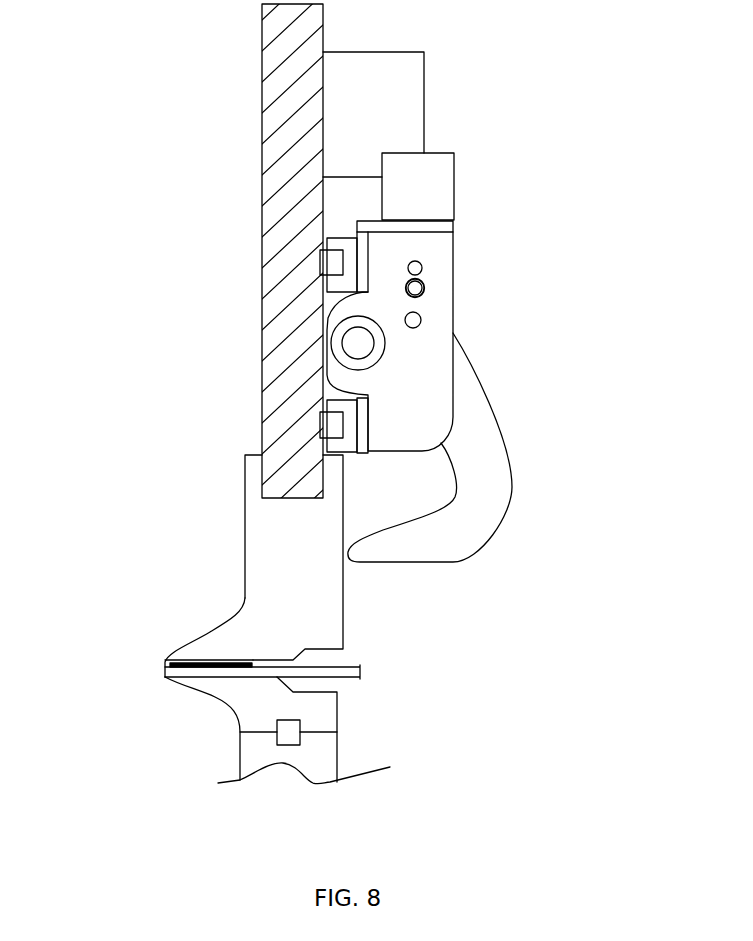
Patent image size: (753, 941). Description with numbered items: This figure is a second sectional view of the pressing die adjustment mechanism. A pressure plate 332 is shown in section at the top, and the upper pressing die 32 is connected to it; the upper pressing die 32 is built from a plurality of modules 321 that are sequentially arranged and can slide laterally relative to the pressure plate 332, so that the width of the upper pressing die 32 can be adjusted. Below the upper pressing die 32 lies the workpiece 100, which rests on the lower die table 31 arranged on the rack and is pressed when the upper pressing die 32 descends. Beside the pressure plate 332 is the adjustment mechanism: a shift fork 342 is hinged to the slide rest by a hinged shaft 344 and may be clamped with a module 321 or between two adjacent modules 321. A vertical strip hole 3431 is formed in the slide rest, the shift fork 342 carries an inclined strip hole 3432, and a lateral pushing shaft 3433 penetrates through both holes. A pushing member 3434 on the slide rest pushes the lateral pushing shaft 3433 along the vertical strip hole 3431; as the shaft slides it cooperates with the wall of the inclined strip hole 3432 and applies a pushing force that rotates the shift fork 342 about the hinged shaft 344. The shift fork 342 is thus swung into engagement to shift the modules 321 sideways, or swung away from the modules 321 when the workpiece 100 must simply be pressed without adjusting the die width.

The pressure plate 332 is at (290, 207).
The pushing member 3434 is at (431, 185).
The vertical strip hole 3431 is at (420, 265).
The inclined strip hole 3432 is at (423, 276).
The lateral pushing shaft 3433 is at (421, 287).
The hinged shaft 344 is at (422, 313).
The shift fork 342 is at (480, 493).
The upper pressing die 32 is at (235, 588).
The module 321 is at (258, 627).
The workpiece 100 is at (337, 668).
The lower die table 31 is at (215, 686).